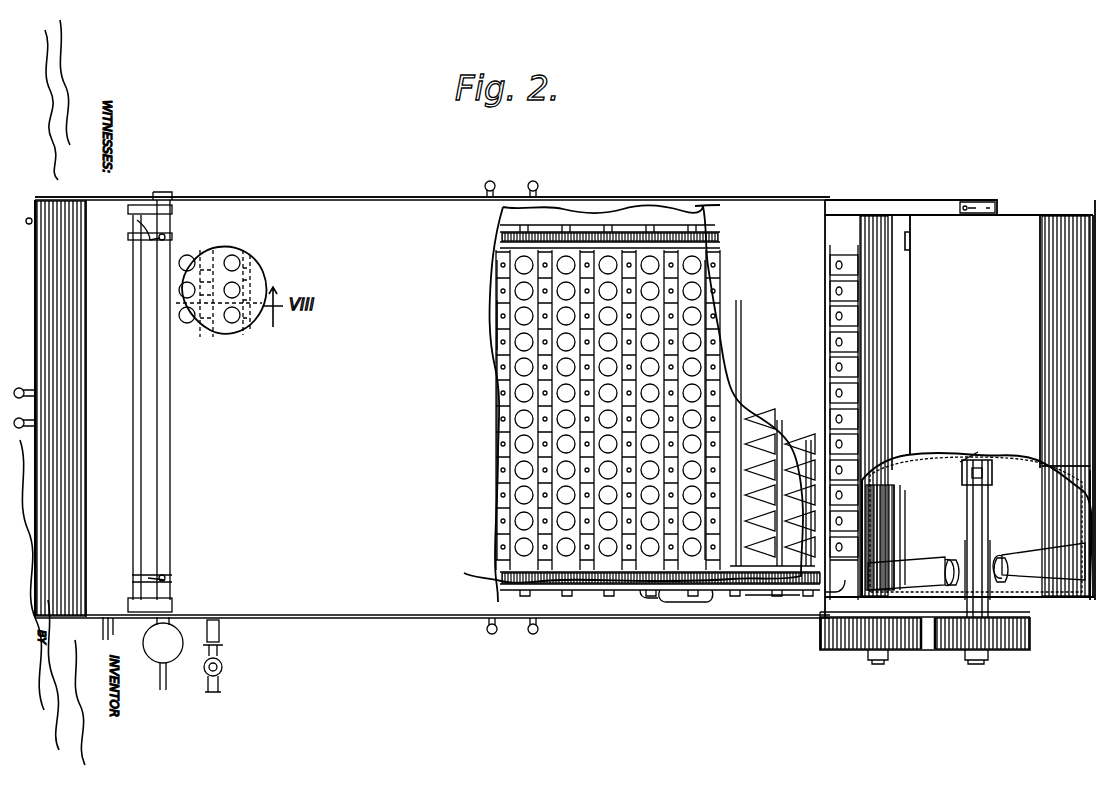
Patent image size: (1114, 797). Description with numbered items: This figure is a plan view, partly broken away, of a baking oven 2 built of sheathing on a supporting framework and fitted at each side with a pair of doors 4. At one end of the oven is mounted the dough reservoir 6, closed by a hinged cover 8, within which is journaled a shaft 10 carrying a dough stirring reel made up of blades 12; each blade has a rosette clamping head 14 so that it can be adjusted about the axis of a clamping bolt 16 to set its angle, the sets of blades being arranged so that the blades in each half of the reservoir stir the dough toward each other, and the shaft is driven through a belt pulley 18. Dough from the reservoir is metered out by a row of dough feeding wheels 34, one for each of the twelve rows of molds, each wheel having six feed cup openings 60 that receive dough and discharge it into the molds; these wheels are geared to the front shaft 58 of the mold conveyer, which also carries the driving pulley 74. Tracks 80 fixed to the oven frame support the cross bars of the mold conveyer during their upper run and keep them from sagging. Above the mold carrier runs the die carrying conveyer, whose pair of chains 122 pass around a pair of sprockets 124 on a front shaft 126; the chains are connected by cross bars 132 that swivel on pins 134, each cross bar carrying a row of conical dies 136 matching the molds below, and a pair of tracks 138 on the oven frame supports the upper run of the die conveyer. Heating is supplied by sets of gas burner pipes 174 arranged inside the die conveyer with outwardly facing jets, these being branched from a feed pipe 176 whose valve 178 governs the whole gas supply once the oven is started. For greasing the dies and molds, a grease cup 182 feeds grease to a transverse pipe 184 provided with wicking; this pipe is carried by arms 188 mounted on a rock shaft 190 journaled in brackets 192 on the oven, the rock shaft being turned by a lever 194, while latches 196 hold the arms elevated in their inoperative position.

The oven 2 is at (810, 612).
The doors 4 is at (572, 620).
The dough reservoir 6 is at (1058, 215).
The hinged cover 8 is at (949, 335).
The shaft 10 is at (990, 510).
The blades 12 is at (1030, 560).
The rosette clamping head 14 is at (1005, 580).
The clamping bolts 16 is at (1012, 585).
The belt pulley 18 is at (1015, 650).
The dough feeding wheel 34 is at (838, 290).
The front shaft 58 is at (877, 660).
The feed cup openings 60 is at (838, 367).
The pulley 74 is at (918, 650).
The tracks 80 is at (497, 272).
The chains 122 is at (588, 215).
The sprockets 124 is at (757, 582).
The shaft 126 is at (722, 306).
The cross bars 132 is at (722, 343).
The pins 134 is at (652, 592).
The conical dies 136 is at (718, 268).
The tracks 138 is at (218, 280).
The pipes 174 is at (497, 347).
The feed pipe 176 is at (220, 688).
The valve 178 is at (222, 667).
The grease cup 182 is at (172, 662).
The pipe 184 is at (165, 410).
The arms 188 is at (160, 238).
The rock shaft 190 is at (140, 380).
The brackets 192 is at (137, 208).
The lever 194 is at (104, 640).
The latches 196 is at (113, 625).